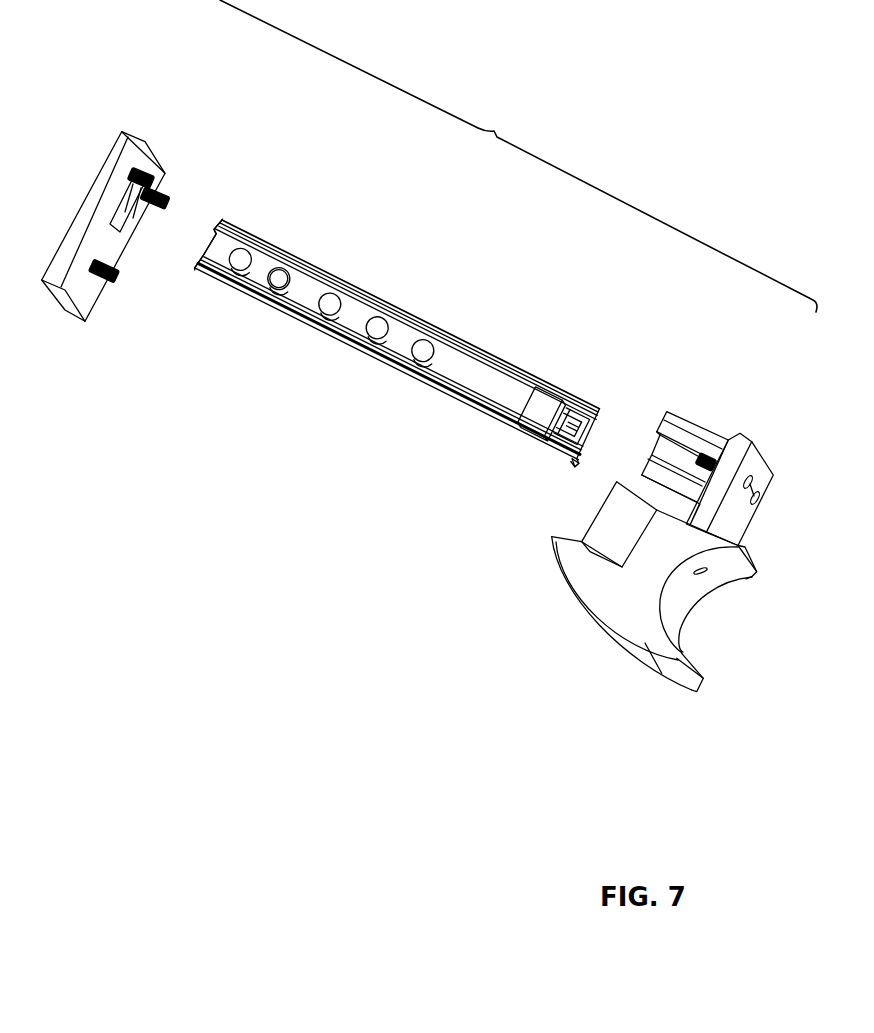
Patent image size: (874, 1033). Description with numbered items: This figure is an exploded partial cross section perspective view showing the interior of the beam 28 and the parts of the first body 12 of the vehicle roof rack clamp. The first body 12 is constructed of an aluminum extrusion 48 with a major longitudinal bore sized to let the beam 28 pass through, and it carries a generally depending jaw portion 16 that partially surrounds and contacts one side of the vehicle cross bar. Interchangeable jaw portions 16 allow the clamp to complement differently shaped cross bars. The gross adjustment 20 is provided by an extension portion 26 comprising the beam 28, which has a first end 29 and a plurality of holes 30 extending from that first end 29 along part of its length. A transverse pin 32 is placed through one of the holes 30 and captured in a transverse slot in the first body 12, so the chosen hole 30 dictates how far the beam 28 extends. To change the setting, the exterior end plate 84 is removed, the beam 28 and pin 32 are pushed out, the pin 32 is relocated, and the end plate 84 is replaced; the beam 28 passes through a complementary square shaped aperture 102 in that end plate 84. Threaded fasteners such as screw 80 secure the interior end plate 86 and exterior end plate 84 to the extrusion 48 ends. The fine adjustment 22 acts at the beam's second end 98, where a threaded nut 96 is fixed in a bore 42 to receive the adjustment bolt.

The first body 12 is at (494, 131).
The jaw portion 16 is at (585, 614).
The gross adjustment 20 is at (279, 266).
The fine adjustment 22 is at (552, 398).
The extension portion 26 is at (347, 281).
The beam 28 is at (407, 309).
The first end 29 is at (222, 218).
The holes 30 is at (405, 357).
The transverse pin 32 is at (268, 292).
The bore 42 is at (600, 408).
The extrusions 48 is at (683, 411).
The set screw 80 is at (110, 283).
The exterior end plate 84 is at (135, 128).
The interior end plate 86 is at (743, 434).
The threaded nut 96 is at (547, 393).
The second end 98 is at (580, 467).
The square shaped aperture 102 is at (118, 220).